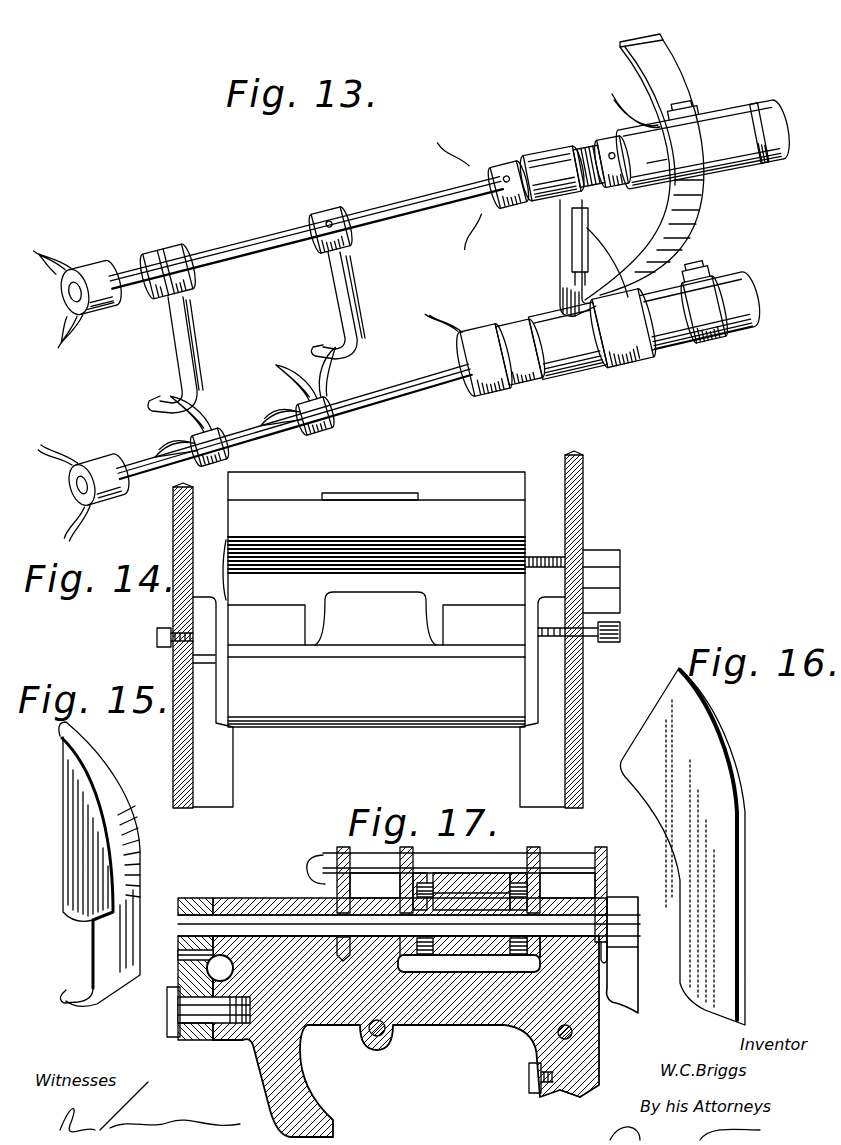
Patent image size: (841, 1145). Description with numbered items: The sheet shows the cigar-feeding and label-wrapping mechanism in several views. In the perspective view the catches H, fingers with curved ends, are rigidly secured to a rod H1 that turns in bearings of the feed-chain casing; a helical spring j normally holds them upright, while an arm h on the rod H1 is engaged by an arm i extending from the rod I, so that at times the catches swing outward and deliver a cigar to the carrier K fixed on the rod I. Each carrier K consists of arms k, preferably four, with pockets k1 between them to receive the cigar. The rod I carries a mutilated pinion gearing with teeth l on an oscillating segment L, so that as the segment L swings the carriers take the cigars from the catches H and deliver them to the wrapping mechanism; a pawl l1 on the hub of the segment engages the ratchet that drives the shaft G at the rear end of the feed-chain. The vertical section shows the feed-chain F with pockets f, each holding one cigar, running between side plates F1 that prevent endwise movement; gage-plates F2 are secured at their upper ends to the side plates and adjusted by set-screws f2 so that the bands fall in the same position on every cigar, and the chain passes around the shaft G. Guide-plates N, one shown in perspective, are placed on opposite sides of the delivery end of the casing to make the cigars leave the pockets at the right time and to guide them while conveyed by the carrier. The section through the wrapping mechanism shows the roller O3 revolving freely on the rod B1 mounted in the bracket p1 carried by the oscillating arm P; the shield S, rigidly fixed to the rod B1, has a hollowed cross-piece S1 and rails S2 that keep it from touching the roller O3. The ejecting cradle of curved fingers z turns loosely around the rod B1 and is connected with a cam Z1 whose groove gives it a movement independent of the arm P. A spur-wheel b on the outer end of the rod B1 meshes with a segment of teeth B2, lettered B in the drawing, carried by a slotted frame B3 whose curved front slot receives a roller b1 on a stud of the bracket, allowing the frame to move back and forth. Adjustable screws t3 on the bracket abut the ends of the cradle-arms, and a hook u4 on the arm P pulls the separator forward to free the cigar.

In FIG. 13, the catches H is at (170, 376).
In FIG. 13, the rod H1 is at (274, 241).
In FIG. 13, the carrier K is at (262, 432).
In FIG. 13, the arms k is at (150, 444).
In FIG. 13, the pockets k1 is at (240, 397).
In FIG. 13, the rod I is at (260, 432).
In FIG. 13, the arm i is at (558, 272).
In FIG. 13, the helical spring j is at (556, 150).
In FIG. 13, the arm h is at (591, 222).
In FIG. 13, the oscillating segment L is at (606, 120).
In FIG. 13, the teeth l is at (708, 68).
In FIG. 13, the pawl l1 is at (682, 281).
In FIG. 14, the feed-chain F is at (374, 585).
In FIG. 14, the pockets f is at (482, 512).
In FIG. 14, the side plates F1 is at (170, 555).
In FIG. 16, the side plates F1 is at (738, 912).
In FIG. 14, the set-screws f2 is at (638, 636).
In FIG. 14, the gage-plates F2 is at (192, 660).
In FIG. 14, the shaft G is at (616, 597).
In FIG. 14, the guide-plates N is at (236, 763).
In FIG. 15, the guide-plates N is at (62, 878).
In FIG. 17, the body block B is at (178, 960).
In FIG. 17, the rod B1 is at (270, 910).
In FIG. 17, the segment of teeth B2 is at (178, 950).
In FIG. 17, the slotted frame B3 is at (178, 990).
In FIG. 17, the spur-wheel b is at (201, 897).
In FIG. 17, the roller b1 is at (175, 1030).
In FIG. 17, the bracket p1 is at (210, 1028).
In FIG. 17, the shield S is at (428, 876).
In FIG. 17, the cross-piece S1 is at (455, 886).
In FIG. 17, the rails S2 is at (560, 852).
In FIG. 17, the curved fingers z is at (336, 852).
In FIG. 17, the cam Z1 is at (641, 920).
In FIG. 17, the roller O3 is at (482, 962).
In FIG. 17, the adjustable screws t3 is at (377, 1037).
In FIG. 17, the hook u4 is at (533, 1090).
In FIG. 17, the arm P is at (572, 1101).